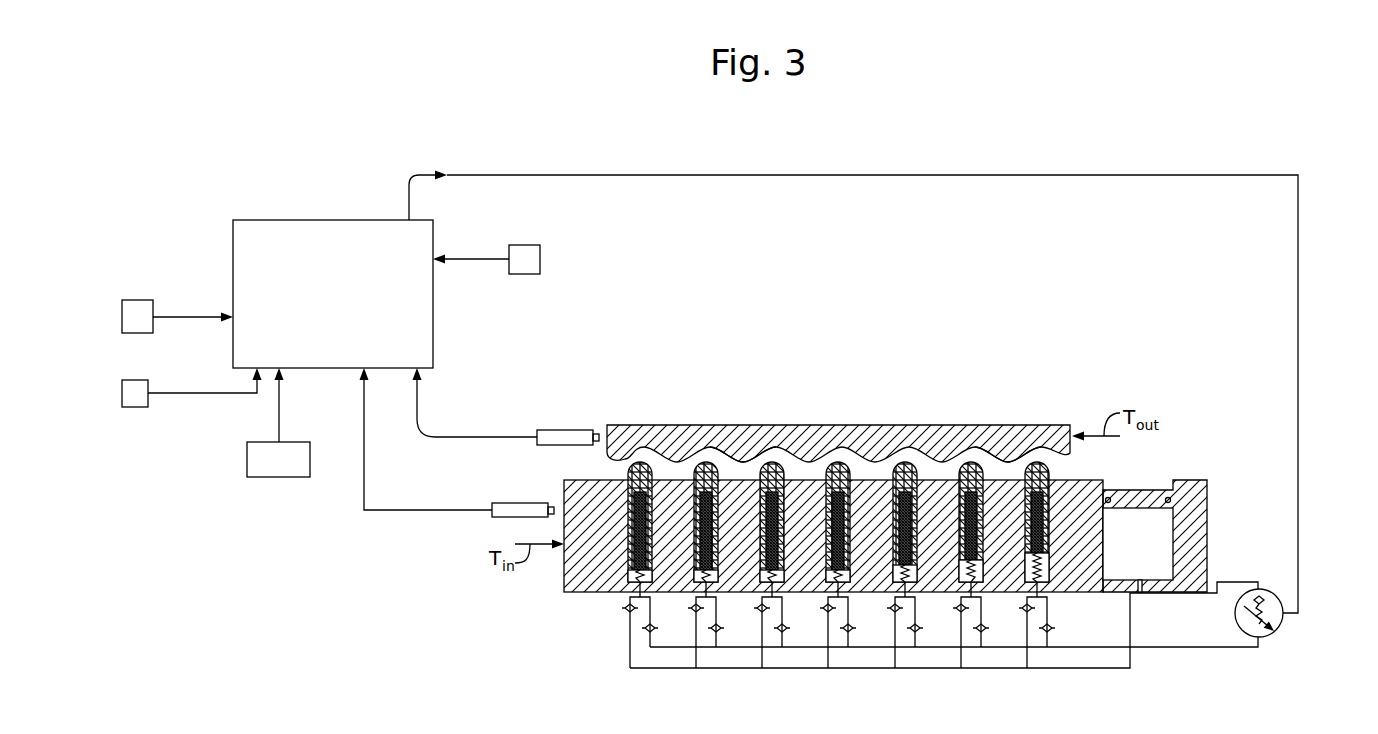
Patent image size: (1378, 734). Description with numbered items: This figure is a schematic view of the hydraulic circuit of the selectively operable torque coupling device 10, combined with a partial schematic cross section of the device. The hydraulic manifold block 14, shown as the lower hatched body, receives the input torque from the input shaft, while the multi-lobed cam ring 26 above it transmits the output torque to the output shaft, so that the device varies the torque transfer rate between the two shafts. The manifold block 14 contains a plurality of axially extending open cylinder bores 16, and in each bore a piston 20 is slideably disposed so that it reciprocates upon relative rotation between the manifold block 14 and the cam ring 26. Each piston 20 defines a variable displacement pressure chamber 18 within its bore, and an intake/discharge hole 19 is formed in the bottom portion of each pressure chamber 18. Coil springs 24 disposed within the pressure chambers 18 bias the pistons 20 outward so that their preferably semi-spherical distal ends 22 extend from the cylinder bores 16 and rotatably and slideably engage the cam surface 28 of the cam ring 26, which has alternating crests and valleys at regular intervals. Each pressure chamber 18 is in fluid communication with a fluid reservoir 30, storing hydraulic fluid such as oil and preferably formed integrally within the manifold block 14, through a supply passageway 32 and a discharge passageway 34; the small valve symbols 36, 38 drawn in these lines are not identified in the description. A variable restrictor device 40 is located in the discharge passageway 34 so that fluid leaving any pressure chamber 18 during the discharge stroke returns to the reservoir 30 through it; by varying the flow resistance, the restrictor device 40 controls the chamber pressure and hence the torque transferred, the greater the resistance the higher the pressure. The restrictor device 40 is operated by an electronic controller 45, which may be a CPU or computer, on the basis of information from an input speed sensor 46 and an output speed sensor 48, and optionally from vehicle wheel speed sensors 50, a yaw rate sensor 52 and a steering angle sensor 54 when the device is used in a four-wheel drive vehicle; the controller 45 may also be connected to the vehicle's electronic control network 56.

The torque coupling device 10 is at (920, 354).
The hydraulic manifold block 14 is at (583, 600).
The cylinder bores 16 is at (976, 572).
The pressure chamber 18 is at (895, 562).
The intake/discharge hole 19 is at (912, 586).
The pistons 20 is at (1000, 456).
The distal ends 22 is at (835, 461).
The coil springs 24 is at (1045, 571).
The multi-lobed cam ring 26 is at (670, 412).
The cam surface 28 is at (745, 461).
The fluid reservoir 30 is at (1150, 547).
The supply passageway 32 is at (654, 670).
The discharge passageway 34 is at (1188, 668).
The inlet valve 36 is at (760, 612).
The outlet valve 38 is at (800, 627).
The variable restrictor device 40 is at (1282, 627).
The electronic controller 45 is at (222, 262).
The input speed sensor 46 is at (514, 503).
The output speed sensor 48 is at (558, 430).
The vehicle wheel speed sensors 50 is at (122, 393).
The yaw rate sensor 52 is at (122, 317).
The steering angle sensor 54 is at (545, 262).
The electronic control network 56 is at (247, 460).